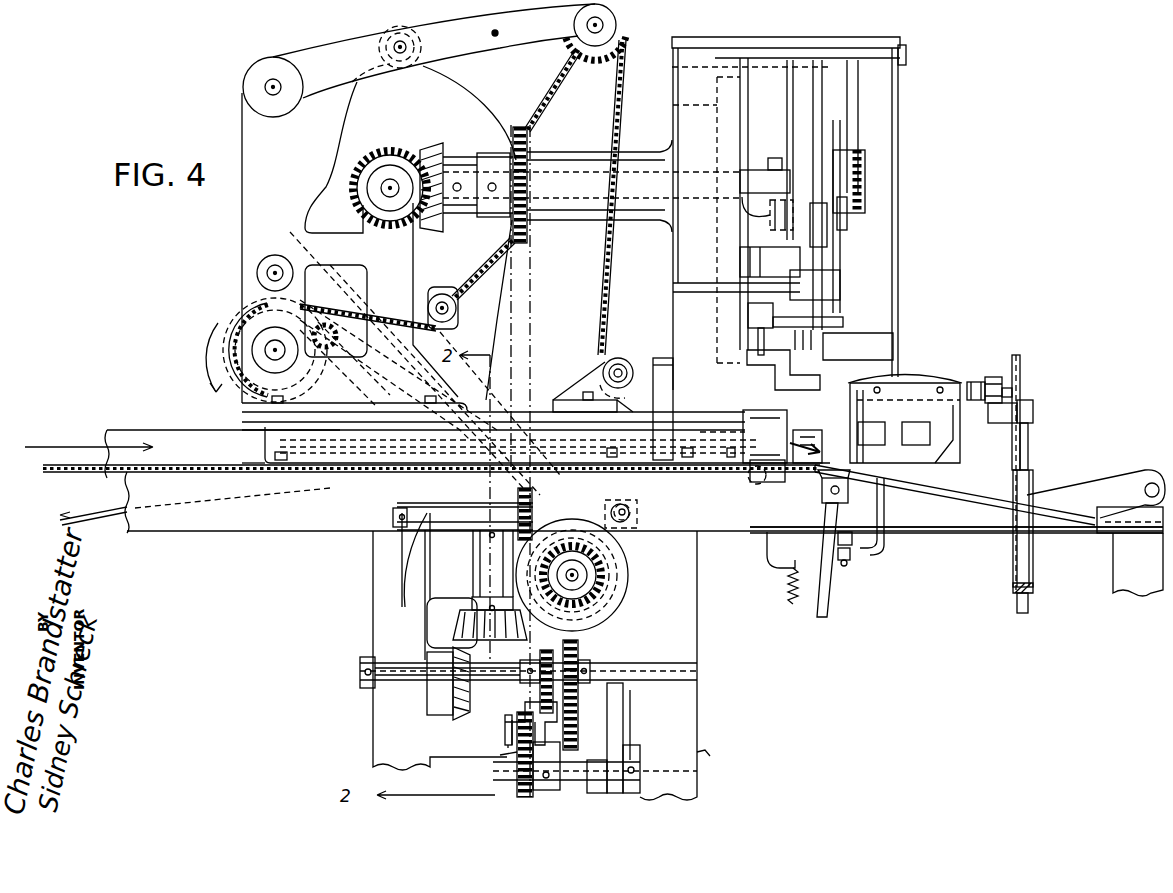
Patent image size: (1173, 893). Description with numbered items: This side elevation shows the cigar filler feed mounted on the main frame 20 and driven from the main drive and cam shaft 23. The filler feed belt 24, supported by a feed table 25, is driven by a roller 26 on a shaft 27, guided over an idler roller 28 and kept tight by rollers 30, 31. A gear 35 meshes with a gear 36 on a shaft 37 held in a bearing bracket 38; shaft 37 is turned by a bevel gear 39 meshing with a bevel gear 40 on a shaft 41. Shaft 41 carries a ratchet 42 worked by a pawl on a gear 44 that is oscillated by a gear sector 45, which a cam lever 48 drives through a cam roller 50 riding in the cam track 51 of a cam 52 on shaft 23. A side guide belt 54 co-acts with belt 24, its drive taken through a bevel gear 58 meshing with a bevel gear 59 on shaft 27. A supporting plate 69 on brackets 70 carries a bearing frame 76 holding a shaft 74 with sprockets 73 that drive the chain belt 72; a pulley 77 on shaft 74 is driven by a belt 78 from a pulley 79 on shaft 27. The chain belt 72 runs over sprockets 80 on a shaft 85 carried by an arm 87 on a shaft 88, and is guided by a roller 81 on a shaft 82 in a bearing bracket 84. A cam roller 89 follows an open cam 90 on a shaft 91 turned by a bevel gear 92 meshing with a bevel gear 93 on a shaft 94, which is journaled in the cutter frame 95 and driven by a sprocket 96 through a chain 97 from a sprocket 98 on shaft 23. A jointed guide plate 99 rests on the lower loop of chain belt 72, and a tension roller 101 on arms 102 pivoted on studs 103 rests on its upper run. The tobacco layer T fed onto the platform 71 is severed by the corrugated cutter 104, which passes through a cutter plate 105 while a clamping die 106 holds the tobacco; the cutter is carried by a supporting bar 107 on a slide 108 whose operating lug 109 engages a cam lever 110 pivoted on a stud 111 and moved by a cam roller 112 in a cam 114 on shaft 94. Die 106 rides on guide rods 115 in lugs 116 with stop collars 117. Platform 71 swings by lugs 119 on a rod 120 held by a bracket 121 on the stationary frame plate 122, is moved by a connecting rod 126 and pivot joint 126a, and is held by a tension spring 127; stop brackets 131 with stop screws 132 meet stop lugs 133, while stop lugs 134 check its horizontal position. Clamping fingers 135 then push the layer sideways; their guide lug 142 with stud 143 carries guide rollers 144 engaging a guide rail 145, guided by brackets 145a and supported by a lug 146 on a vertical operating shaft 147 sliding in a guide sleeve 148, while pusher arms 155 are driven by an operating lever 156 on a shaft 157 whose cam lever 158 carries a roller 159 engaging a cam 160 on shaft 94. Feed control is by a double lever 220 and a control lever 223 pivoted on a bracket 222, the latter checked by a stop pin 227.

The main frame 20 is at (163, 533).
The main drive and cam shaft 23 is at (493, 775).
The filler feed belt 24 is at (62, 472).
The feed table 25 is at (103, 474).
The roller 26 is at (600, 575).
The shaft 27 is at (585, 585).
The idler roller 28 is at (748, 480).
The roller 30 is at (632, 516).
The roller 31 is at (534, 512).
The gear 35 is at (617, 506).
The gear 36 is at (460, 532).
The shaft 37 is at (486, 575).
The bearing bracket 38 is at (452, 622).
The bevel gear 39 is at (488, 640).
The bevel gear 40 is at (455, 720).
The shaft 41 is at (360, 680).
The ratchet 42 is at (556, 645).
The gear 44 is at (585, 655).
The gear sector 45 is at (563, 758).
The cam lever 48 is at (640, 782).
The cam roller 50 is at (608, 775).
The cam track 51 is at (625, 740).
The cam 52 is at (610, 690).
The side guide belt 54 is at (106, 452).
The bevel gear 58 is at (617, 545).
The bevel gear 59 is at (625, 563).
The supporting plate 69 is at (408, 403).
The brackets 70 is at (248, 452).
The platform 71 is at (960, 498).
The chain belt 72 is at (620, 90).
The sprockets 73 is at (331, 330).
The shaft 74 is at (273, 350).
The bearing frame 76 is at (242, 233).
The pulley 77 is at (312, 382).
The belt 78 is at (370, 405).
The pulley 79 is at (490, 545).
The sprockets 80 is at (582, 130).
The roller 81 is at (616, 364).
The shaft 82 is at (626, 366).
The bearing bracket 84 is at (580, 393).
The shaft 85 is at (604, 25).
The arm 87 is at (335, 50).
The shaft 88 is at (266, 86).
The cam roller 89 is at (392, 32).
The open cam 90 is at (470, 97).
The shaft 91 is at (391, 196).
The bevel gear 92 is at (360, 170).
The bevel gear 93 is at (430, 148).
The shaft 94 is at (452, 155).
The cutter frame 95 is at (728, 37).
The sprocket 96 is at (520, 125).
The chain 97 is at (530, 295).
The sprocket 98 is at (517, 768).
The jointed guide plate 99 is at (460, 440).
The roller 101 is at (448, 298).
The arms 102 is at (340, 290).
The studs 103 is at (258, 272).
The corrugated cutter 104 is at (823, 358).
The cutter plate 105 is at (780, 482).
The clamping die 106 is at (783, 360).
The supporting bar 107 is at (820, 322).
The slide 108 is at (745, 90).
The operating lug 109 is at (745, 210).
The cam lever 110 is at (775, 158).
The stud 111 is at (830, 284).
The cam roller 112 is at (770, 225).
The cam 114 is at (788, 108).
The guide rods 115 is at (758, 343).
The lugs 116 is at (748, 315).
The stop collars 117 is at (745, 255).
The lugs 119 is at (1090, 490).
The rod 120 is at (1135, 490).
The bracket 121 is at (1152, 483).
The stationary frame plate 122 is at (762, 533).
The connecting rod 126 is at (829, 608).
The pivot joint 126a is at (822, 490).
The tension spring 127 is at (788, 590).
The stop brackets 131 is at (878, 515).
The adjustable stop screws 132 is at (852, 570).
The stop lugs 133 is at (852, 540).
The stop lugs 134 is at (772, 545).
The clamping fingers 135 is at (823, 430).
The guide lug 142 is at (975, 380).
The stud 143 is at (1012, 390).
The guide rollers 144 is at (995, 376).
The guide rail 145 is at (990, 420).
The brackets 145a is at (1020, 367).
The lug 146 is at (1033, 412).
The vertical operating shaft 147 is at (1017, 603).
The guide sleeve 148 is at (1013, 573).
The pusher arms 155 is at (890, 378).
The operating lever 156 is at (900, 243).
The shaft 157 is at (907, 57).
The cam lever 158 is at (848, 122).
The roller 159 is at (838, 228).
The cam 160 is at (827, 254).
The double lever 220 is at (510, 716).
The bracket 222 is at (500, 757).
The control lever 223 is at (538, 702).
The stop pin 227 is at (508, 735).
The tobacco layer T is at (55, 466).